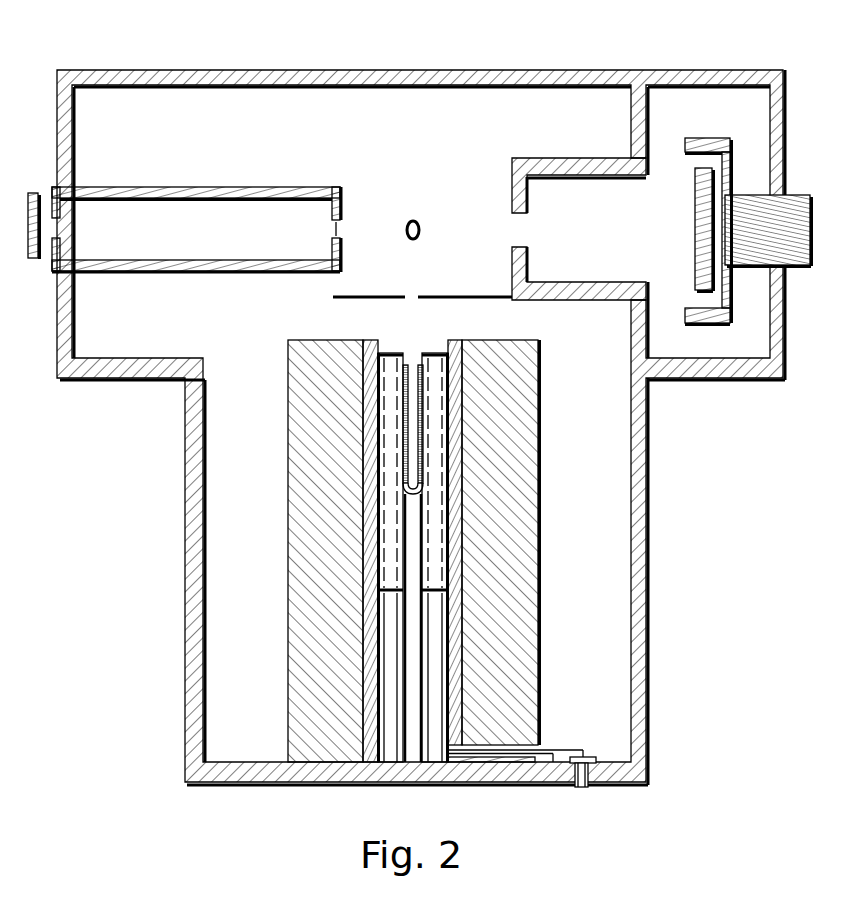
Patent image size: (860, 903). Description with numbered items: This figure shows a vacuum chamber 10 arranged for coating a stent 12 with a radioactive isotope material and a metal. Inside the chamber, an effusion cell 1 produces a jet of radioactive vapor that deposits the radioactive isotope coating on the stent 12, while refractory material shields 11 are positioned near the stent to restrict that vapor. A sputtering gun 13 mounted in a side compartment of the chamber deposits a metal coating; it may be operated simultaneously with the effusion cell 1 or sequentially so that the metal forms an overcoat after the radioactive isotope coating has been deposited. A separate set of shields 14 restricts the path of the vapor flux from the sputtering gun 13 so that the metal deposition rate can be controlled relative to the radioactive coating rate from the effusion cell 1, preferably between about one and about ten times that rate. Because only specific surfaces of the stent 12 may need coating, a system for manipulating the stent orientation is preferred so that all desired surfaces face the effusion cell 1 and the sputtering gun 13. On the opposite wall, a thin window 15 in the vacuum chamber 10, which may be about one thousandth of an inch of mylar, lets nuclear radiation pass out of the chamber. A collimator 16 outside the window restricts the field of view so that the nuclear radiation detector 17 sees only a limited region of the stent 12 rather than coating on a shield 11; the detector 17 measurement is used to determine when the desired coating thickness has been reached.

The effusion cell 1 is at (410, 365).
The vacuum chamber 10 is at (420, 70).
The refractory material shields 11 is at (452, 297).
The stent 12 is at (421, 226).
The sputtering gun 13 is at (695, 193).
The shields 14 is at (512, 199).
The thin window 15 is at (341, 230).
The collimator 16 is at (75, 176).
The nuclear radiation detector 17 is at (33, 193).